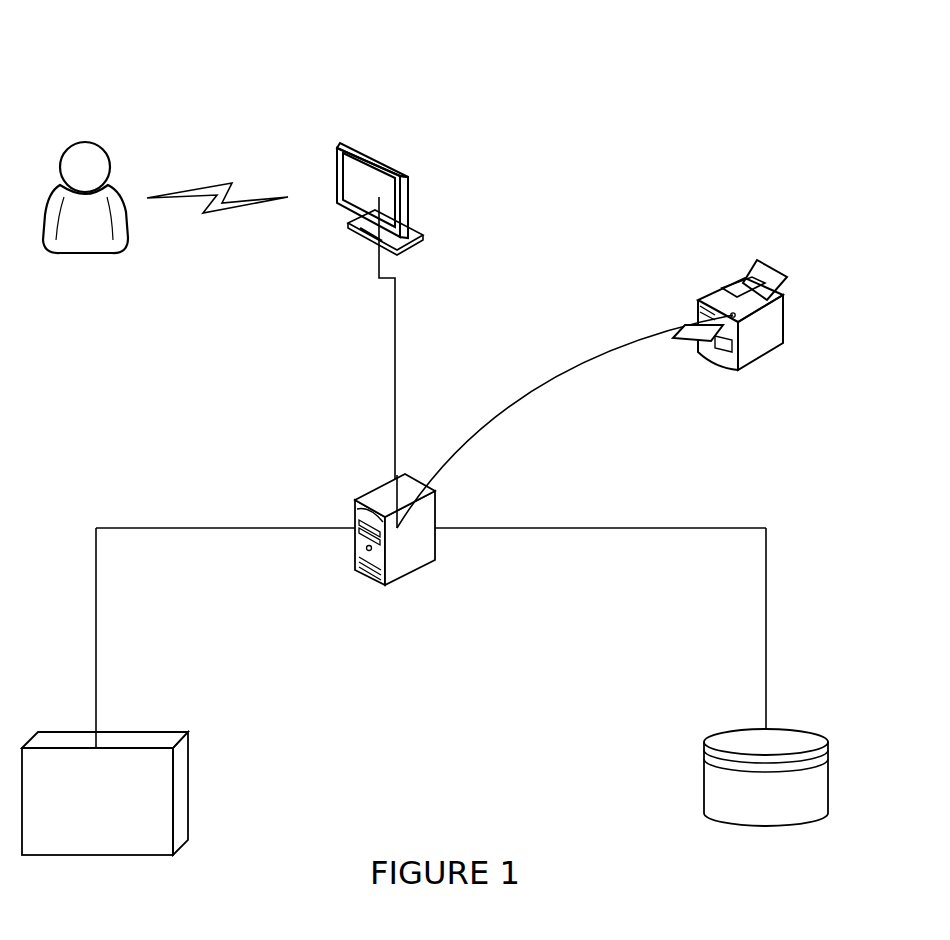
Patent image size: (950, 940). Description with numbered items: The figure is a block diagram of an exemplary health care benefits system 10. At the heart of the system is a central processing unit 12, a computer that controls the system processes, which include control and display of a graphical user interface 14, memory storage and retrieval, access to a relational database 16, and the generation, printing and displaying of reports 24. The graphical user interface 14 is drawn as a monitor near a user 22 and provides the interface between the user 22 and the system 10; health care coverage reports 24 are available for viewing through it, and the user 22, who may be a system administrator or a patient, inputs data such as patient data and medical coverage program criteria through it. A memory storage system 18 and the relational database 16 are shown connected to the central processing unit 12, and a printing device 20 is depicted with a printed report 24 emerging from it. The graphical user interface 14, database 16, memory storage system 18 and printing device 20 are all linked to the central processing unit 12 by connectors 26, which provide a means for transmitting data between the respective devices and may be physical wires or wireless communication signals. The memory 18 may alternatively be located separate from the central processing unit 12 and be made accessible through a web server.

The health care benefits system 10 is at (113, 80).
The central processing unit 12 is at (406, 577).
The graphical user interface 14 is at (380, 152).
The relational database 16 is at (766, 777).
The memory storage system 18 is at (105, 793).
The printing device 20 is at (753, 368).
The user 22 is at (85, 197).
The report 24 is at (692, 345).
The connectors 26 is at (755, 529).